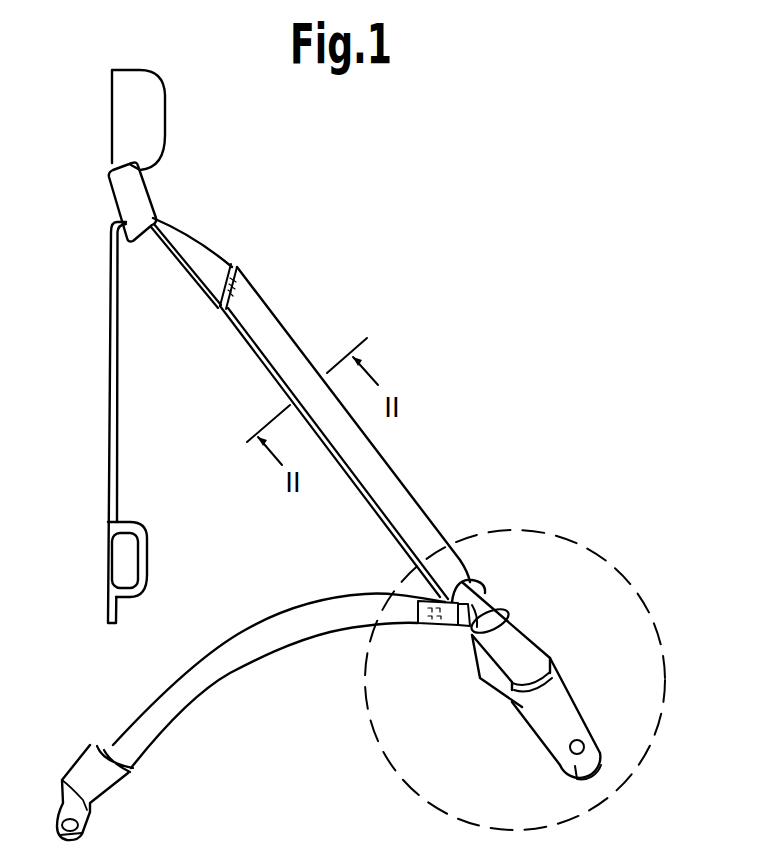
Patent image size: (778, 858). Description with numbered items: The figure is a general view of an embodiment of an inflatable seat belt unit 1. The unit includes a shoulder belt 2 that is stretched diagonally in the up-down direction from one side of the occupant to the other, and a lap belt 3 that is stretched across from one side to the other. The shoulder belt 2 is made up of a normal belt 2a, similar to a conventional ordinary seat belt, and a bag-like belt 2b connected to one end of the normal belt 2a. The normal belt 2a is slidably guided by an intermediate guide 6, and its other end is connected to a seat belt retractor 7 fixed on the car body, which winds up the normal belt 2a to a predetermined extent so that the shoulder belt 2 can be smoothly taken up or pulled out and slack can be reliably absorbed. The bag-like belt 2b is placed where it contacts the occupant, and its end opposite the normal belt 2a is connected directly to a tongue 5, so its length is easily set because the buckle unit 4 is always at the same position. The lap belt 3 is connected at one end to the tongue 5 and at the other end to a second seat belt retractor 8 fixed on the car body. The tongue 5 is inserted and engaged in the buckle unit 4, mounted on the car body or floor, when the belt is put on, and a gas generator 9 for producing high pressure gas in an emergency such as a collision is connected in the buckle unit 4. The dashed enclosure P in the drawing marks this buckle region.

The inflatable seat belt unit 1 is at (335, 518).
The shoulder belt 2 is at (310, 397).
The normal belt 2a is at (215, 260).
The bag-like belt 2b is at (345, 426).
The lap belt 3 is at (245, 663).
The buckle unit 4 is at (520, 642).
The tongue 5 is at (467, 590).
The intermediate guide 6 is at (155, 128).
The seat belt retractor 7 is at (118, 553).
The seat belt retractor 8 is at (112, 783).
The gas generator 9 is at (567, 706).
The buckle portion P is at (538, 527).